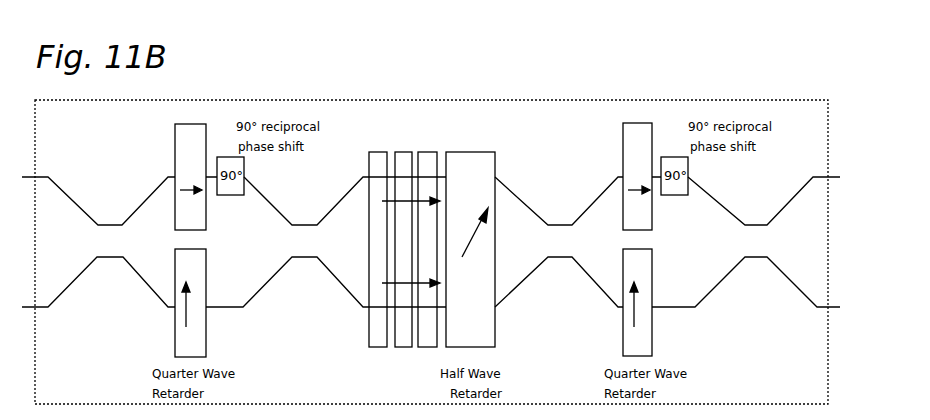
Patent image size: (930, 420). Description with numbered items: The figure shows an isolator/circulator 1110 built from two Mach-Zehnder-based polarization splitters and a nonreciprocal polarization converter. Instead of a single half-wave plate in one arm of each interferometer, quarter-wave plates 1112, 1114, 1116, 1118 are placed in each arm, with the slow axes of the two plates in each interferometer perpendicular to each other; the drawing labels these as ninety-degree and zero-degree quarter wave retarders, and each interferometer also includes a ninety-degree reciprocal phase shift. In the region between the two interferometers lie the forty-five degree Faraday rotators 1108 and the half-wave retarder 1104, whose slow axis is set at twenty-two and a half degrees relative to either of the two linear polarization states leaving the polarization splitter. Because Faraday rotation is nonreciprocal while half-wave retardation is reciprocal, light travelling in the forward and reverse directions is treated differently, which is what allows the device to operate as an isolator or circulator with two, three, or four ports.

The isolator/circulator 1110 is at (570, 100).
The quarter-wave plate 1112 is at (175, 148).
The quarter-wave plate 1114 is at (206, 337).
The quarter-wave plate 1116 is at (623, 138).
The quarter-wave plate 1118 is at (652, 337).
The half-wave retarder 1104 is at (495, 332).
The Faraday rotators 1108 is at (403, 347).